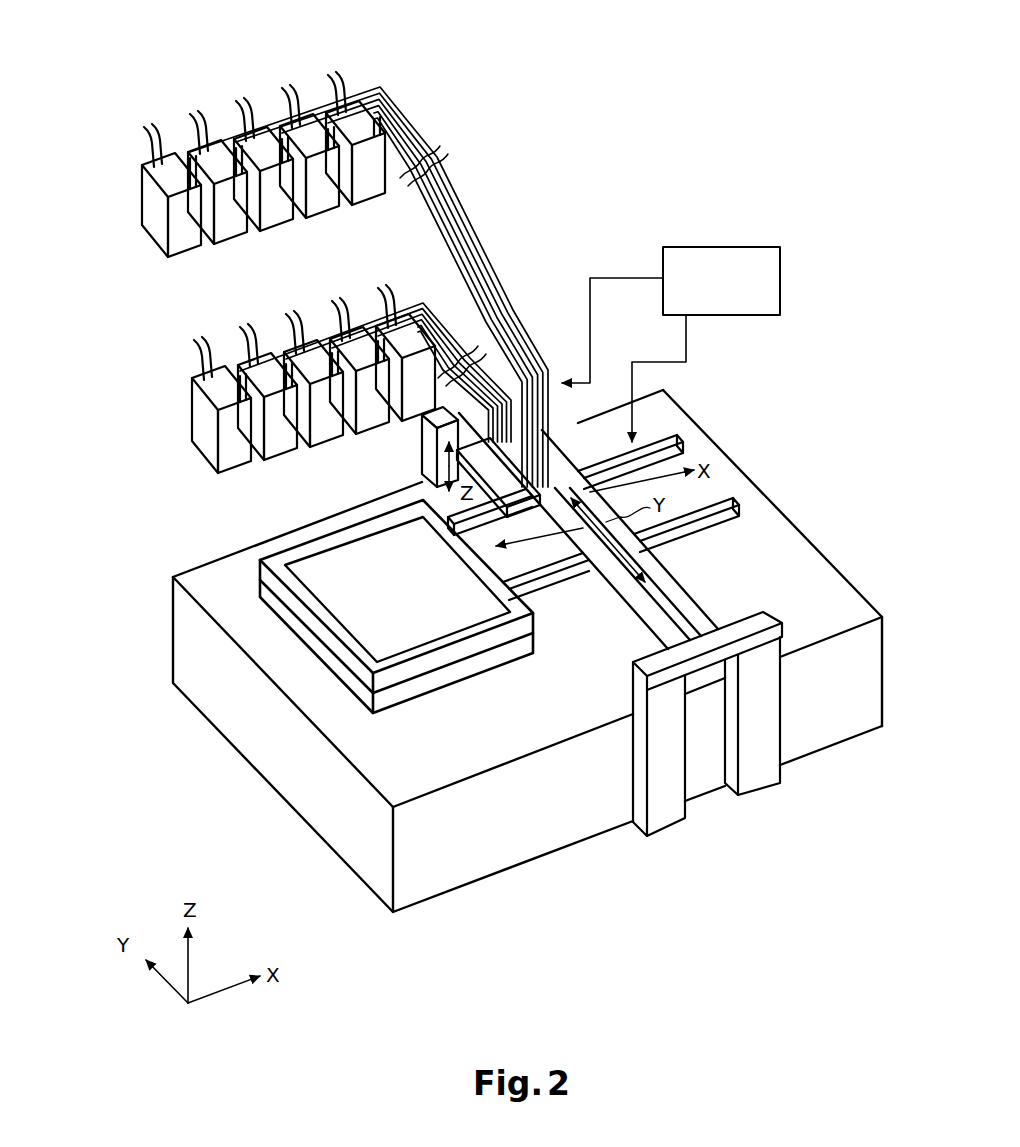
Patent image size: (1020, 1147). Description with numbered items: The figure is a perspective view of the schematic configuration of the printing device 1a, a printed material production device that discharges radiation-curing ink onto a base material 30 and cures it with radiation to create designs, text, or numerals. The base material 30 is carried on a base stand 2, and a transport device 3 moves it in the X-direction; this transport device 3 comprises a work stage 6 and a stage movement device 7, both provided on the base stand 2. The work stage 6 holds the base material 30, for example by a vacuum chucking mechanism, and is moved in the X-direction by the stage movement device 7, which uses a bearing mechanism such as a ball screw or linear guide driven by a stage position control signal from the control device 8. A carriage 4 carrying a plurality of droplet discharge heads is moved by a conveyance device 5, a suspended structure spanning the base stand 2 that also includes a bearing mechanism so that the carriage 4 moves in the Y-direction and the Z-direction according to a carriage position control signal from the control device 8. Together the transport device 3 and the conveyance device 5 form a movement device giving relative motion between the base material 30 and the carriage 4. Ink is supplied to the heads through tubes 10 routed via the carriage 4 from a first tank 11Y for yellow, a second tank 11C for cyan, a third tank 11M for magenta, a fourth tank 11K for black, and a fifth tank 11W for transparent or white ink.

The printing device 1a is at (820, 342).
The base stand 2 is at (322, 790).
The transport device 3 is at (352, 647).
The carriage 4 is at (568, 438).
The conveyance device 5 is at (420, 432).
The work stage 6 is at (344, 647).
The stage movement device 7 is at (734, 498).
The control device 8 is at (703, 247).
The tubes 10 is at (397, 103).
The fifth tank 11W is at (148, 210).
The fourth tank 11K is at (180, 148).
The third tank 11M is at (235, 143).
The second tank 11C is at (287, 123).
The first tank 11Y is at (332, 108).
The base material 30 is at (378, 637).